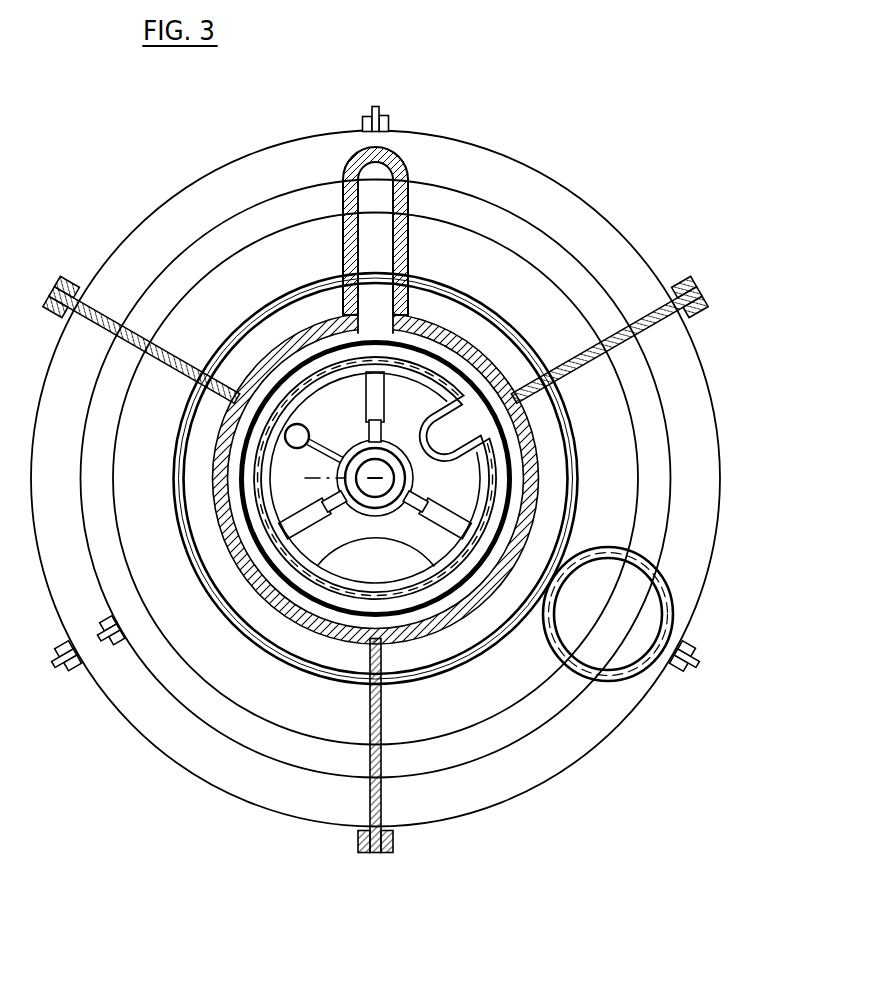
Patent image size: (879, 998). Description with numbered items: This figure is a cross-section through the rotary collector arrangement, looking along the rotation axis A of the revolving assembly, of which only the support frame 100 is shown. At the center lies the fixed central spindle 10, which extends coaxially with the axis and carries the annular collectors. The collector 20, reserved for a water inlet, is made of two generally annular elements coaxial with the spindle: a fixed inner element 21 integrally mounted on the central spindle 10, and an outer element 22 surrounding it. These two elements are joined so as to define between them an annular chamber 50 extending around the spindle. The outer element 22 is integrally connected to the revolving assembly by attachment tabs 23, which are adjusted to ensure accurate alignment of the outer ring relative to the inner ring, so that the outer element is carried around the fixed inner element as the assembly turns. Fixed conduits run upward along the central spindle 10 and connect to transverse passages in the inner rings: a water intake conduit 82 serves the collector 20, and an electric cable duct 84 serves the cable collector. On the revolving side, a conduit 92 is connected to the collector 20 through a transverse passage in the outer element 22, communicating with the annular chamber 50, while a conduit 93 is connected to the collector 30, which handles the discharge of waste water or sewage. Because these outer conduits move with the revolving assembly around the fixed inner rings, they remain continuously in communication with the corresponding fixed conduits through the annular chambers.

The fixed central spindle 10 is at (390, 452).
The collector 20 is at (444, 322).
The inner element 21 is at (310, 566).
The outer element 22 is at (325, 636).
The attachment tabs 23 is at (105, 316).
The collector 30 is at (626, 420).
The annular chamber 50 is at (455, 605).
The water intake conduit 82 is at (458, 436).
The electric cable duct 84 is at (308, 431).
The conduit 92 is at (380, 168).
The conduit 93 is at (628, 640).
The support frame 100 is at (712, 538).